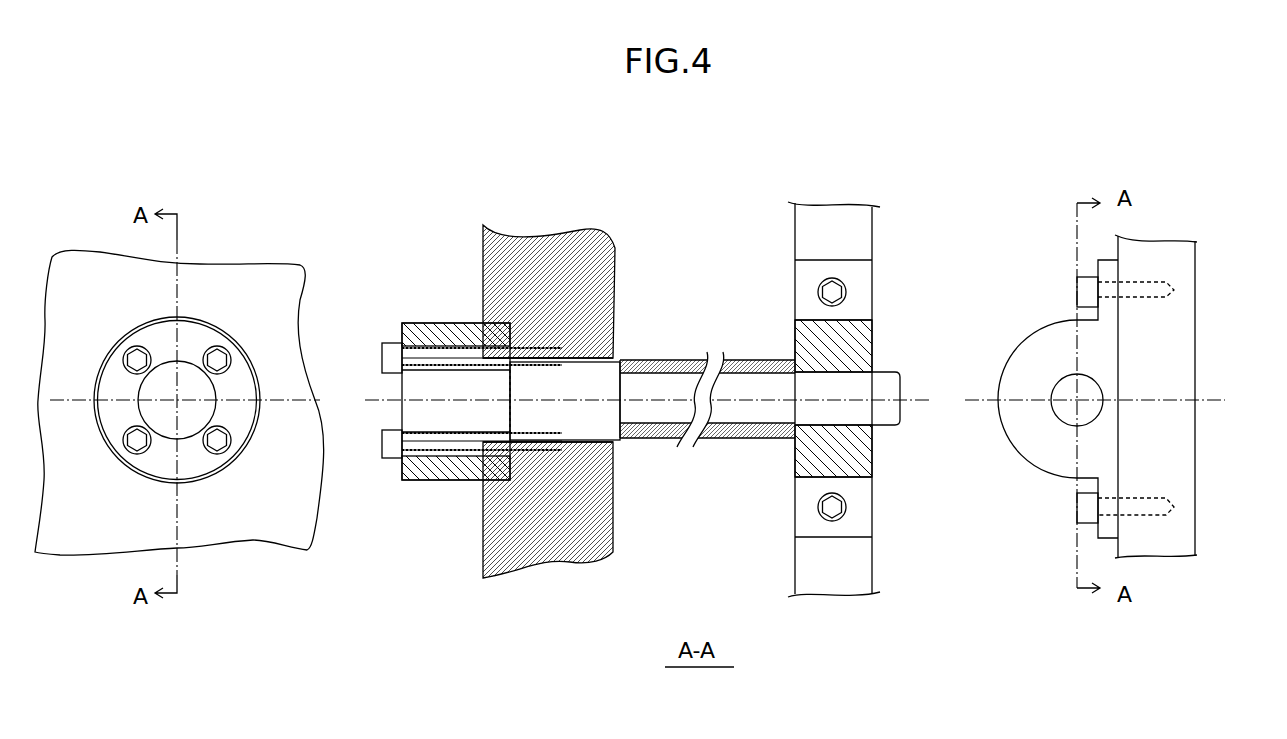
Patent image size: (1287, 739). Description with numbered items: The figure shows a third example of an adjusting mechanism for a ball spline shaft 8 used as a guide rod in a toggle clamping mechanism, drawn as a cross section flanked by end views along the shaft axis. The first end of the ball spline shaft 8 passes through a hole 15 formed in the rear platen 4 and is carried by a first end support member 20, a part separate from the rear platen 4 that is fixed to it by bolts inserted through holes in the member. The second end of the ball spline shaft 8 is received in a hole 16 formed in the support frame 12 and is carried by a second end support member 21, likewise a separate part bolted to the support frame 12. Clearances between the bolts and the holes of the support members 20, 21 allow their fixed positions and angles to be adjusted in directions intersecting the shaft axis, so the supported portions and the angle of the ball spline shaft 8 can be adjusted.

The rear platen 4 is at (292, 543).
The ball spline shaft 8 is at (893, 388).
The support frame 12 is at (862, 235).
The hole 15 is at (590, 350).
The hole 16 is at (812, 368).
The first end support member 20 is at (202, 468).
The second end support member 21 is at (860, 285).